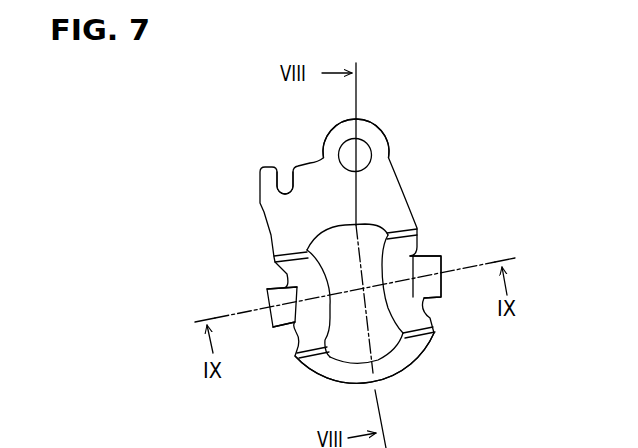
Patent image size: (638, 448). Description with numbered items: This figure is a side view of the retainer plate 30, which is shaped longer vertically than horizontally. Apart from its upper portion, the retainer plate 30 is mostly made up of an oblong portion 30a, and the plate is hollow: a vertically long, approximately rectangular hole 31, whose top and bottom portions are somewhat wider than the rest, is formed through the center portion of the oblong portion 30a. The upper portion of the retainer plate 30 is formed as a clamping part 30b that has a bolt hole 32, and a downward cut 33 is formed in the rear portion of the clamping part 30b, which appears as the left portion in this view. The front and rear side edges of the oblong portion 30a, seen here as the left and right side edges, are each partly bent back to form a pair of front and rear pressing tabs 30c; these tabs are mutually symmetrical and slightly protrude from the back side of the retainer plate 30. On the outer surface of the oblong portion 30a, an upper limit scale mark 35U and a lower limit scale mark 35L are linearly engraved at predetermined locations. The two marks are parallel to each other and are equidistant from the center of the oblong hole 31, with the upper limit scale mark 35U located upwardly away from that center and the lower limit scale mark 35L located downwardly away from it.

The retainer plate 30 is at (225, 195).
The oblong portion 30a is at (393, 270).
The clamping part 30b is at (370, 123).
The pressing tabs 30c is at (267, 297).
The rectangular hole 31 is at (379, 334).
The bolt hole 32 is at (364, 155).
The downward cut 33 is at (283, 171).
The upper limit scale mark 35U is at (280, 247).
The lower limit scale mark 35L is at (308, 362).